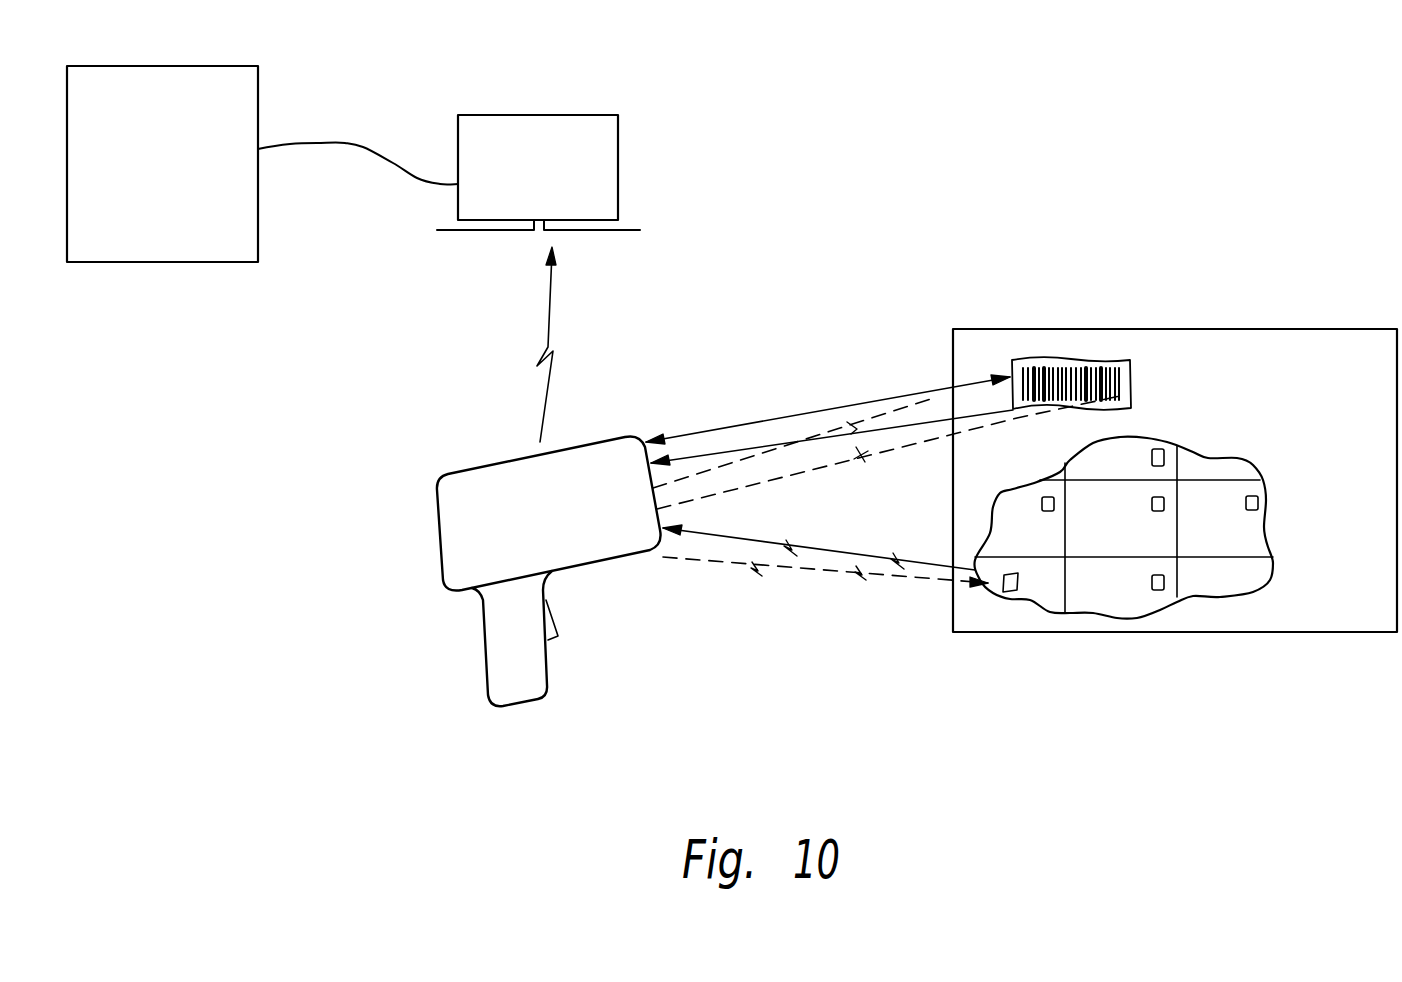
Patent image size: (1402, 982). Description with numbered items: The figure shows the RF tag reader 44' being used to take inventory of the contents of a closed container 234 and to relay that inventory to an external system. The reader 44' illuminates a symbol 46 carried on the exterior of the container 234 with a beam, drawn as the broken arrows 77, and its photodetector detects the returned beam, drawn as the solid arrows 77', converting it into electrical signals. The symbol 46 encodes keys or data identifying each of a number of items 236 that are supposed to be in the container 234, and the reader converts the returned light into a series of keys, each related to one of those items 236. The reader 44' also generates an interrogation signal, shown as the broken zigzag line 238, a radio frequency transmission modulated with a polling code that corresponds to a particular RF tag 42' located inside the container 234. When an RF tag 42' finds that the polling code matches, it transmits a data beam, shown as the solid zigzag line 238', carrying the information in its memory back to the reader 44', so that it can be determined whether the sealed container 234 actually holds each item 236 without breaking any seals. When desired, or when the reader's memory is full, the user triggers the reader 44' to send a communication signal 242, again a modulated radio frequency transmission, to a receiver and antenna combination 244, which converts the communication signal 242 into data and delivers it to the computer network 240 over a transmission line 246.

The computer network 240 is at (157, 263).
The transmission line 246 is at (366, 142).
The receiver and antenna combination 244 is at (618, 162).
The communication signal 242 is at (537, 347).
The RF tag reader 44' is at (467, 571).
The returned beam 77' is at (829, 404).
The beam 77 is at (886, 460).
The data beam 238' is at (819, 527).
The interrogation signal 238 is at (825, 601).
The container 234 is at (1262, 633).
The symbol 46 is at (1073, 360).
The items 236 is at (1065, 473).
The RF tag 42' is at (1130, 574).